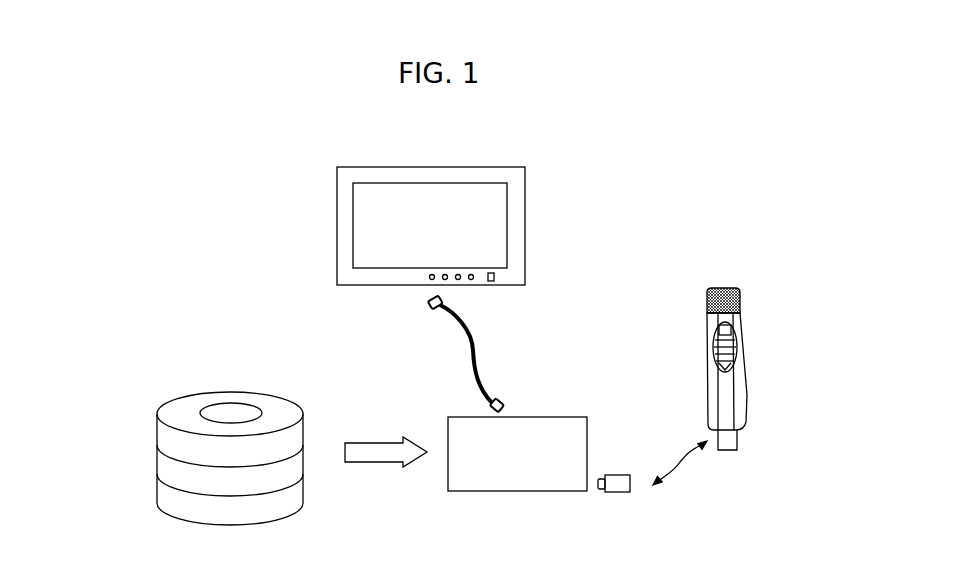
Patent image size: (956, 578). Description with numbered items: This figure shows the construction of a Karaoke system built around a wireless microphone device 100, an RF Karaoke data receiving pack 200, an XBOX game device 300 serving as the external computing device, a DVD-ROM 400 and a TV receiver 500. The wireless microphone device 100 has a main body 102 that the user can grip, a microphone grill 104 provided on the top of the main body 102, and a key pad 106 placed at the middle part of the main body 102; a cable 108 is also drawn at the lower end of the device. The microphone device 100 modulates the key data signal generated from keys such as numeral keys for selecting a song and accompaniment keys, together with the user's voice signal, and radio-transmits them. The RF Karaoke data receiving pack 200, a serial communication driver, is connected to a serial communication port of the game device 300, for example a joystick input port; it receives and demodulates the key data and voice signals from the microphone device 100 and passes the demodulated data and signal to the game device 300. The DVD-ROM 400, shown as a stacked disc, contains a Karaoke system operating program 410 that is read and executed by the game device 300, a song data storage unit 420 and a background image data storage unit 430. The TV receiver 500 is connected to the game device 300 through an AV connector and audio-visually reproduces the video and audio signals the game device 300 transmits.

The wireless microphone device 100 is at (763, 334).
The main body 102 is at (747, 400).
The microphone grill 104 is at (740, 300).
The key pad 106 is at (738, 346).
The cable 108 is at (768, 439).
The RF Karaoke data receiving pack 200 is at (621, 474).
The XBOX game device 300 is at (560, 416).
The DVD-ROM 400 is at (213, 430).
The Karaoke system operating program 410 is at (157, 428).
The song data storage unit 420 is at (157, 462).
The background image data storage unit 430 is at (157, 491).
The TV receiver 500 is at (527, 229).